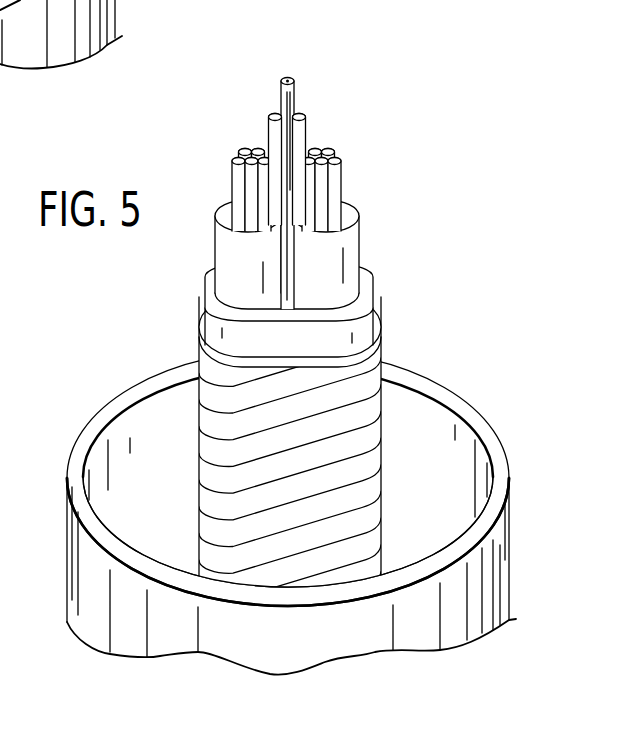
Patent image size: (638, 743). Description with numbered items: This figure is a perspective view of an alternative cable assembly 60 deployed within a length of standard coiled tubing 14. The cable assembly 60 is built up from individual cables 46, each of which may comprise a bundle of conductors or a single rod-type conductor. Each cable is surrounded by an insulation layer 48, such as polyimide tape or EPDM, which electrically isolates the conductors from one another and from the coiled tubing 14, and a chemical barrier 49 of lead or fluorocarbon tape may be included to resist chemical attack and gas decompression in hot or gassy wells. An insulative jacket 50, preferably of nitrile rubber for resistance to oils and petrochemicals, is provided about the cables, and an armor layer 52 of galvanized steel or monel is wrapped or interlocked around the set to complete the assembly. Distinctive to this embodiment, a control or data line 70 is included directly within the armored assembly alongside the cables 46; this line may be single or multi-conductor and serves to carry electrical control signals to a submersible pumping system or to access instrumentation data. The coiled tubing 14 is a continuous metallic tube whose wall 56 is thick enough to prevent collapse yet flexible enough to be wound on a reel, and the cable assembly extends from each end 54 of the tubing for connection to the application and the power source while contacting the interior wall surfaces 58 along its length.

The coiled tubing 14 is at (67, 553).
The individual cables 46 is at (333, 137).
The insulation layer 48 is at (333, 260).
The chemical barrier 49 is at (357, 327).
The insulative jacket 50 is at (208, 327).
The armor layer 52 is at (358, 373).
The end of the coiled tubing 54 is at (110, 415).
The wall 56 is at (266, 512).
The interior wall surfaces 58 is at (105, 468).
The cable assembly 60 is at (263, 334).
The control or data line 70 is at (288, 183).